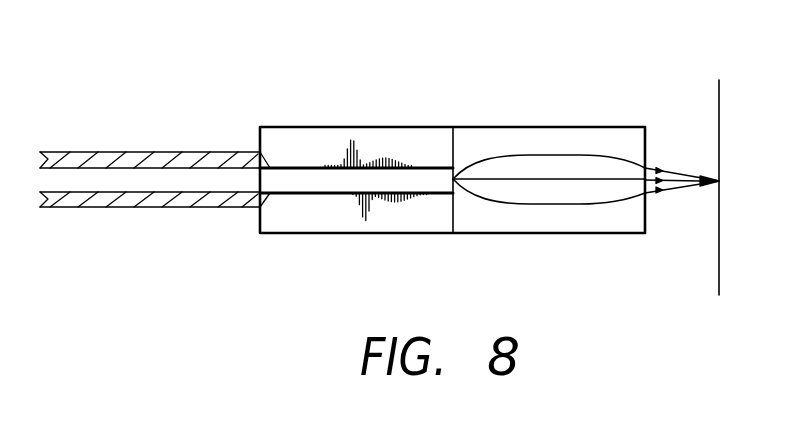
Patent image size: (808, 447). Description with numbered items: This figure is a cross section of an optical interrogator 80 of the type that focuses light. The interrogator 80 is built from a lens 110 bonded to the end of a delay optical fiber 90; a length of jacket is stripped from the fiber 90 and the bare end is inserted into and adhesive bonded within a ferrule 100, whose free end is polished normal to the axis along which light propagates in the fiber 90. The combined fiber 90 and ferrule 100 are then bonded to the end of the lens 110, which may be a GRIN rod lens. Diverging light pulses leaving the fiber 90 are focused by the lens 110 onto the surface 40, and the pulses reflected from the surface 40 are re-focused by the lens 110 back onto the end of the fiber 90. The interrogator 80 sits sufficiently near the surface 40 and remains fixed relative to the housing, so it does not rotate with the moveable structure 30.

The moveable structure 30 is at (719, 110).
The surface 40 is at (717, 131).
The optical interrogator 80 is at (363, 102).
The delay optical fiber 90 is at (272, 176).
The ferrule 100 is at (308, 213).
The lens 110 is at (491, 127).